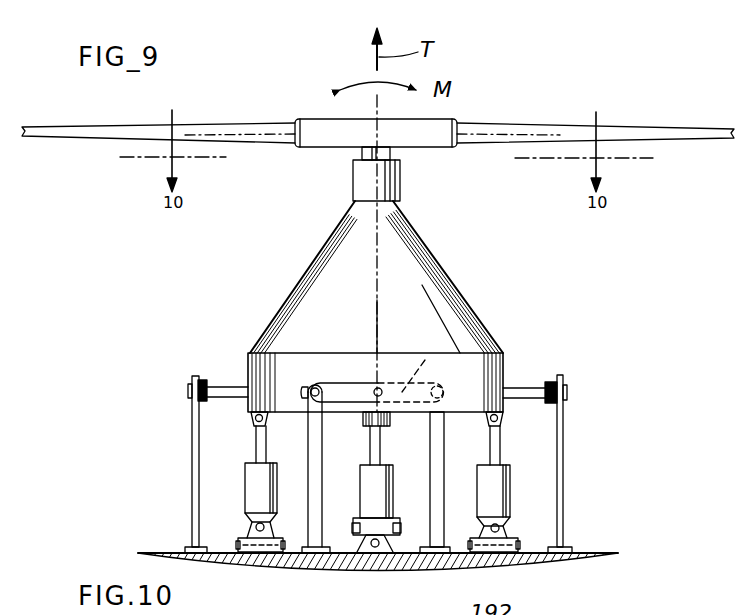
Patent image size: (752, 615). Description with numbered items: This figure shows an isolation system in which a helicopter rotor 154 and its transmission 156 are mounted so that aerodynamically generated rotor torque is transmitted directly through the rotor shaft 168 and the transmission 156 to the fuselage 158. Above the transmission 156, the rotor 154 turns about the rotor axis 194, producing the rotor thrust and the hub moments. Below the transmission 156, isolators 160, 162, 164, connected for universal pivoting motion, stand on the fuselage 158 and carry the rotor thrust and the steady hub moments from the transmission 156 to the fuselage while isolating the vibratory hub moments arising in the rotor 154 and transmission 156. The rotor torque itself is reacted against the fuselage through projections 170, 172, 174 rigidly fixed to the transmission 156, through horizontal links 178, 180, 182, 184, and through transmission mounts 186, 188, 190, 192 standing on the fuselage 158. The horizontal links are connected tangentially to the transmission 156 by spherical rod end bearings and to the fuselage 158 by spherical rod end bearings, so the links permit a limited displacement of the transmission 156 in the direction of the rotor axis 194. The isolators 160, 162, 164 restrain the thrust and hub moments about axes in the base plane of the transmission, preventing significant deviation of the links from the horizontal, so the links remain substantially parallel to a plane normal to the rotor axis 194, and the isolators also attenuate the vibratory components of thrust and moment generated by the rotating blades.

The helicopter rotor 154 is at (316, 124).
The transmission 156 is at (338, 240).
The fuselage 158 is at (598, 557).
The isolator 160 is at (253, 485).
The isolator 162 is at (378, 495).
The isolator 164 is at (508, 509).
The rotor shaft 168 is at (362, 153).
The projection 170 is at (218, 387).
The projection 172 is at (381, 389).
The projection 174 is at (523, 395).
The horizontal link 178 is at (206, 379).
The horizontal link 180 is at (340, 373).
The horizontal link 182 is at (551, 382).
The horizontal link 184 is at (430, 352).
The transmission mount 186 is at (192, 445).
The transmission mount 188 is at (313, 518).
The transmission mount 190 is at (558, 465).
The transmission mount 192 is at (432, 525).
The rotor axis 194 is at (378, 308).